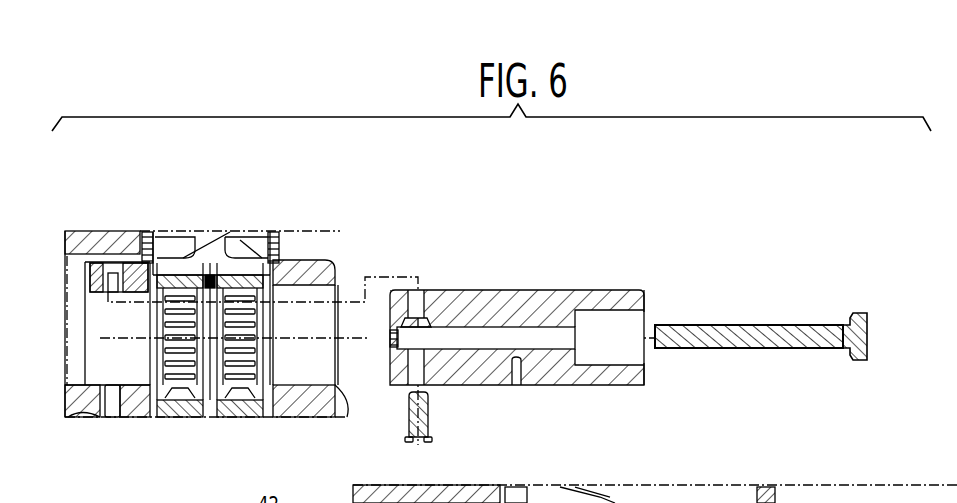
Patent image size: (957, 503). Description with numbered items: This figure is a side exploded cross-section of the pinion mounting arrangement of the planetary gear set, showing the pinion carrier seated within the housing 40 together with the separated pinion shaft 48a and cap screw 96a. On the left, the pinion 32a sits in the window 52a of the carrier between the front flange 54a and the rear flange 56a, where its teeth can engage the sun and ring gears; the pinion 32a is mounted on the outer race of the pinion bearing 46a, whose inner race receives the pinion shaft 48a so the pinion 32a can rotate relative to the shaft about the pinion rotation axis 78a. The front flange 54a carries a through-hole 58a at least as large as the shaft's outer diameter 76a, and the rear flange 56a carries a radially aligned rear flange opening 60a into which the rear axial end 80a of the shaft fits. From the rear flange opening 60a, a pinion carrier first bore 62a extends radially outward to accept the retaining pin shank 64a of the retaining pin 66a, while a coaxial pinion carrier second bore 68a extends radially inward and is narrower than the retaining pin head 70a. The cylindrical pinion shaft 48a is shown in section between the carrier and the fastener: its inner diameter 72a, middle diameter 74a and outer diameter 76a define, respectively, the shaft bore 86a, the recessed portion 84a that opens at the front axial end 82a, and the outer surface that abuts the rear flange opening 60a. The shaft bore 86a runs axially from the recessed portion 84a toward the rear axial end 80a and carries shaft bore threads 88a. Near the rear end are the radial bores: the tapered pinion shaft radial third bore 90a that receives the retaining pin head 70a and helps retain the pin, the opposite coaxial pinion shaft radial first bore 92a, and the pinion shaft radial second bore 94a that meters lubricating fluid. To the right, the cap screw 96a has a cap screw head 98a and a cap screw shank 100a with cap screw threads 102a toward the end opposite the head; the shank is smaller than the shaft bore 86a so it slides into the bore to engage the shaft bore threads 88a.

The housing 40 is at (133, 230).
The pinion 32a is at (255, 243).
The pinion bearing 46a is at (227, 257).
The pinion shaft 48a is at (545, 300).
The window 52a is at (280, 263).
The front flange 54a is at (307, 420).
The rear flange 56a is at (95, 263).
The through-hole 58a is at (336, 297).
The rear flange opening 60a is at (100, 386).
The pinion carrier first bore 62a is at (117, 273).
The retaining pin shank 64a is at (418, 407).
The retaining pin 66a is at (434, 421).
The pinion carrier second bore 68a is at (112, 402).
The retaining pin head 70a is at (418, 437).
The inner diameter 72a is at (557, 320).
The middle diameter 74a is at (605, 310).
The outer diameter 76a is at (647, 292).
The pinion rotation axis 78a is at (298, 342).
The rear axial end 80a is at (390, 358).
The front axial end 82a is at (647, 303).
The recessed portion 84a is at (617, 353).
The shaft bore 86a is at (508, 327).
The shaft bore threads 88a is at (405, 313).
The pinion shaft radial third bore 90a is at (418, 300).
The pinion shaft radial first bore 92a is at (417, 360).
The pinion shaft radial second bore 94a is at (527, 383).
The cap screw 96a is at (748, 303).
The cap screw head 98a is at (870, 333).
The cap screw shank 100a is at (797, 336).
The cap screw threads 102a is at (665, 340).